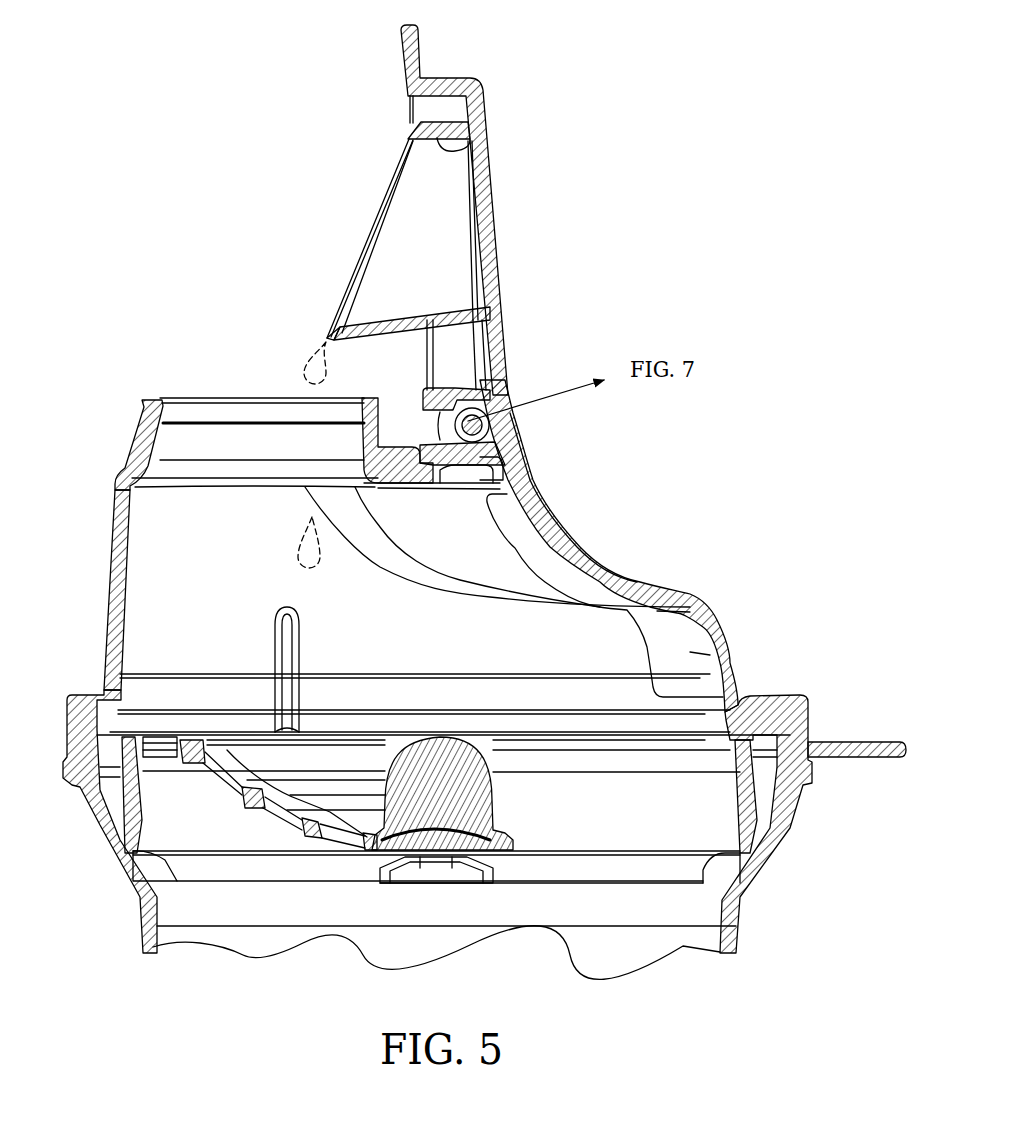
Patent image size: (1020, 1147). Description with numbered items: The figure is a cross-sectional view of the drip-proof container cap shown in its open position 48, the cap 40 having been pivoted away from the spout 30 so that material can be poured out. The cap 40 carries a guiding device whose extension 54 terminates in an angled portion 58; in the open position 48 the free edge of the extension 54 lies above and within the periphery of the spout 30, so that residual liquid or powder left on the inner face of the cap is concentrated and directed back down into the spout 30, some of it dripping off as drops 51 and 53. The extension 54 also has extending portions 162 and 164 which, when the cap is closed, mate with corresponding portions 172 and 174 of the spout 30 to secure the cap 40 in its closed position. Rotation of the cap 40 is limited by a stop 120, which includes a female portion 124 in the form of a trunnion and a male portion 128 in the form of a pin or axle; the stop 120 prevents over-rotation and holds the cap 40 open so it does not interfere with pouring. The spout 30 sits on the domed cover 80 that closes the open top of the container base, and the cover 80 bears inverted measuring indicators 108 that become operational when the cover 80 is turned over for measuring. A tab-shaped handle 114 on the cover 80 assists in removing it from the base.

The spout 30 is at (158, 398).
The cap 40 is at (500, 165).
The open position 48 is at (319, 208).
The drop 51 is at (303, 372).
The drop 53 is at (296, 553).
The extension 54 is at (403, 317).
The angled portion 58 is at (336, 294).
The cover 80 is at (712, 600).
The measuring indicators 108 is at (567, 573).
The handle 114 is at (862, 742).
The stop 120 is at (420, 421).
The female portion 124 is at (457, 397).
The male portion 128 is at (517, 430).
The extending portion 162 is at (490, 134).
The extending portion 164 is at (450, 333).
The portion of spout 172 is at (148, 438).
The portion of spout 174 is at (363, 442).